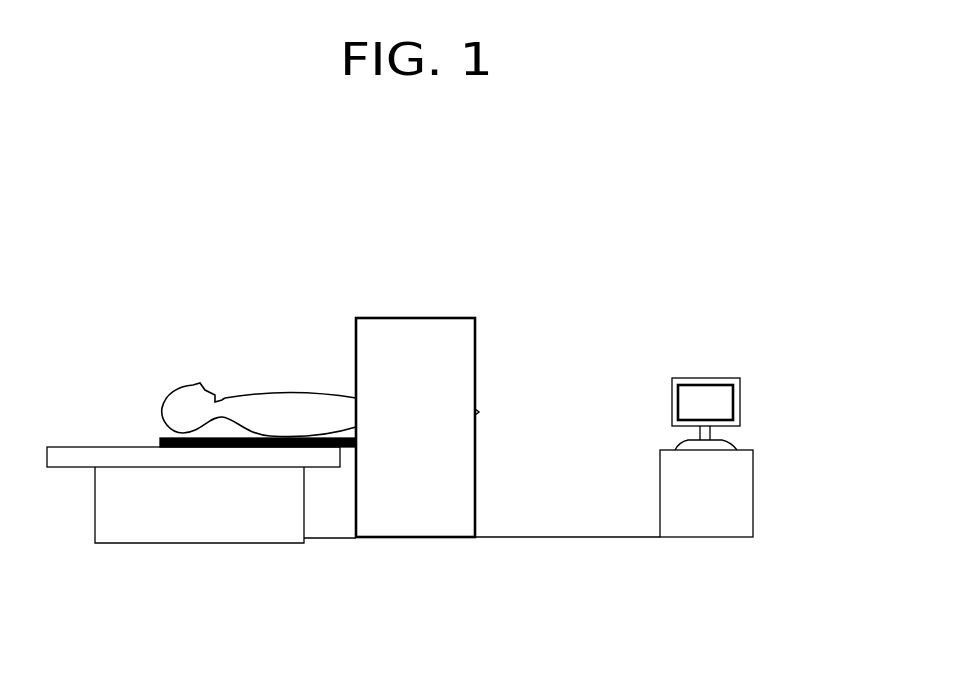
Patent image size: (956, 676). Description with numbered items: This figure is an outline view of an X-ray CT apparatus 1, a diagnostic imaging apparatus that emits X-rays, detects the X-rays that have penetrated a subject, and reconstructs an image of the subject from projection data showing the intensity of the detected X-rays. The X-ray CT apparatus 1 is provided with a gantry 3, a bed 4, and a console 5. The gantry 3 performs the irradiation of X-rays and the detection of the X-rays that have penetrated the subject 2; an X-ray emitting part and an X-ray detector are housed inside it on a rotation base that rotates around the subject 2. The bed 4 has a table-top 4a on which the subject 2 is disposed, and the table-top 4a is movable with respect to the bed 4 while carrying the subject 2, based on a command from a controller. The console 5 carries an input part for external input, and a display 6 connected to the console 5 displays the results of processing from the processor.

The X-ray CT apparatus 1 is at (570, 232).
The subject 2 is at (280, 387).
The gantry 3 is at (425, 318).
The bed 4 is at (230, 545).
The table-top 4a is at (165, 437).
The console 5 is at (757, 500).
The display 6 is at (740, 393).